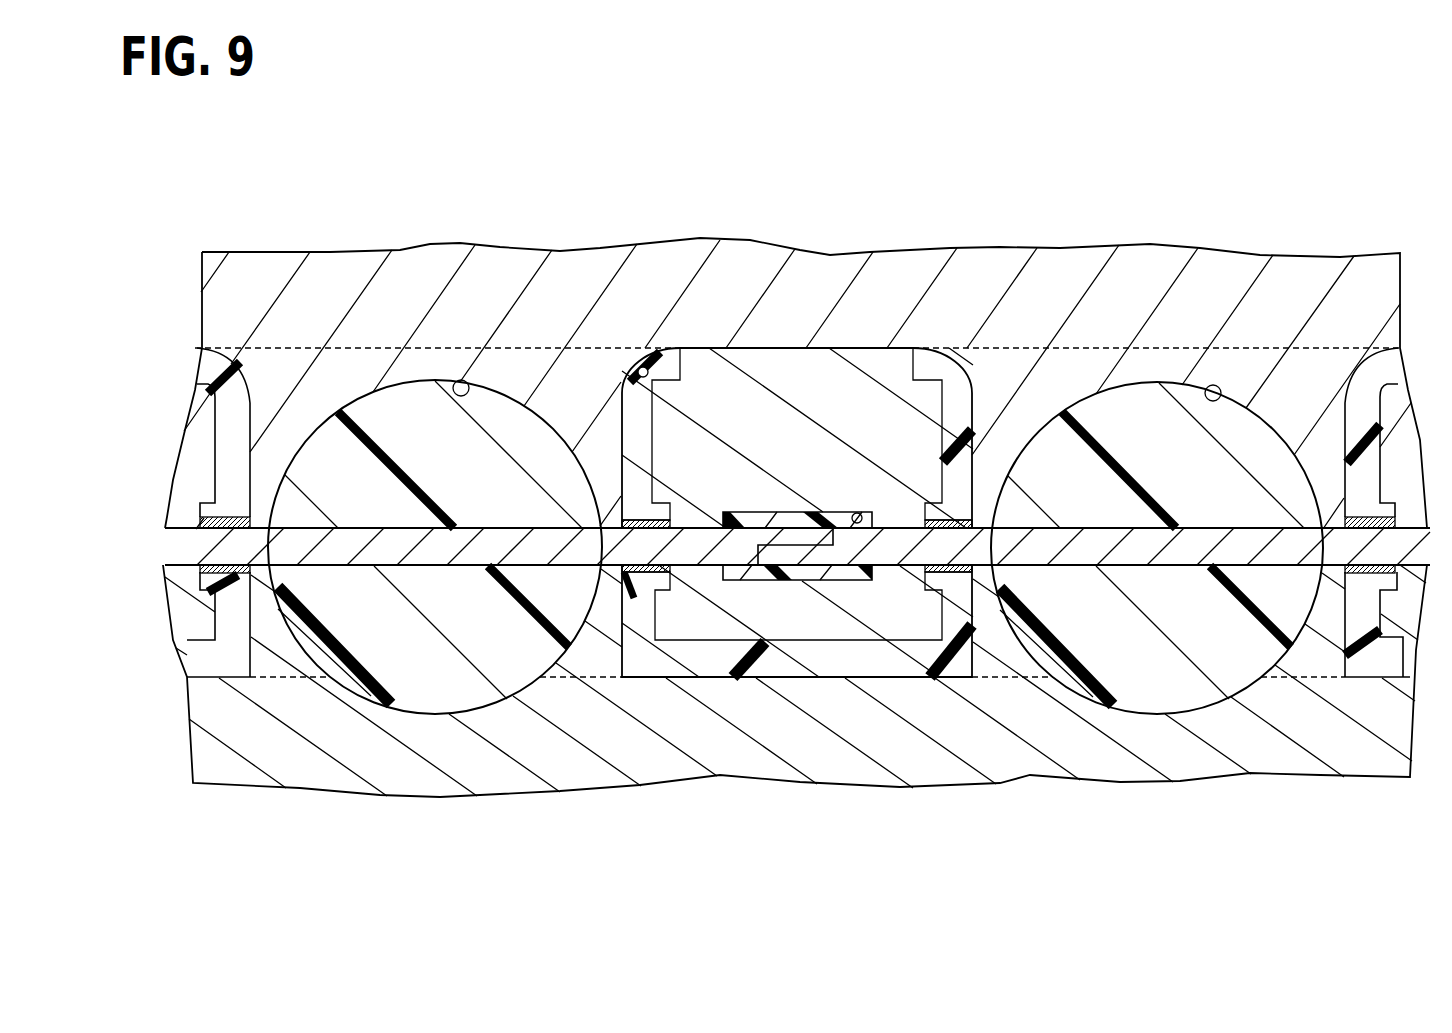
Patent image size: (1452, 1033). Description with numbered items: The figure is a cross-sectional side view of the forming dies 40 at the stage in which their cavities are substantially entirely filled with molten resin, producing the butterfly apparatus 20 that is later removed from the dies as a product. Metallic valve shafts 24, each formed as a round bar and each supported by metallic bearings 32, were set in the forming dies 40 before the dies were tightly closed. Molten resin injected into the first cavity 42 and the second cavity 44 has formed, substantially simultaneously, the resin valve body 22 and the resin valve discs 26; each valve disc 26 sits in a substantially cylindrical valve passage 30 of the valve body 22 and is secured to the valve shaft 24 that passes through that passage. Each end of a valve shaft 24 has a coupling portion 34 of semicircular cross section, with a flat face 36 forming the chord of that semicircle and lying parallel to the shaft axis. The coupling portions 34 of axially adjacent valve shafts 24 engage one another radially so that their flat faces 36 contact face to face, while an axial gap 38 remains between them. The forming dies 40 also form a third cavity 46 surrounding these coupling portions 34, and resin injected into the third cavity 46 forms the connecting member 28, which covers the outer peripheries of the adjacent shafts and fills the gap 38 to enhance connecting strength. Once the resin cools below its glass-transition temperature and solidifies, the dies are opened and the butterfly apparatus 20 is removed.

The butterfly apparatus 20 is at (823, 519).
The valve body 22 is at (708, 350).
The valve shaft 24 is at (443, 553).
The valve disc 26 is at (386, 418).
The connecting member 28 is at (877, 582).
The valve passage 30 is at (253, 403).
The bearing 32 is at (250, 577).
The coupling portion 34 is at (790, 540).
The flat face 36 is at (781, 530).
The gap 38 is at (837, 540).
The forming dies 40 is at (224, 250).
The first cavity 42 is at (470, 378).
The second cavity 44 is at (633, 368).
The third cavity 46 is at (867, 513).